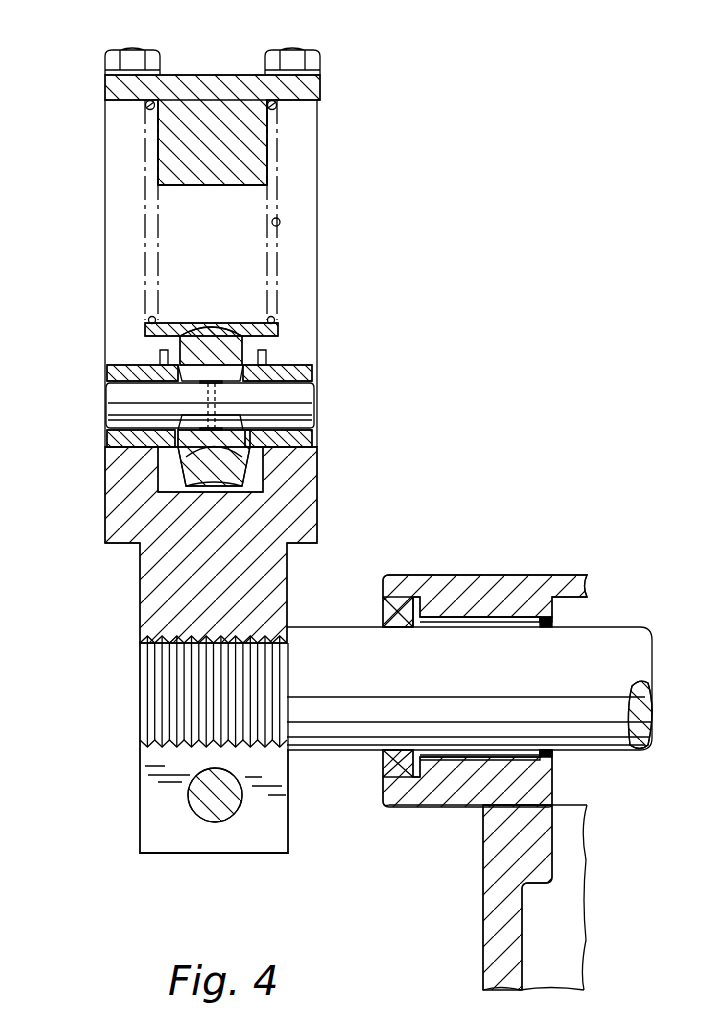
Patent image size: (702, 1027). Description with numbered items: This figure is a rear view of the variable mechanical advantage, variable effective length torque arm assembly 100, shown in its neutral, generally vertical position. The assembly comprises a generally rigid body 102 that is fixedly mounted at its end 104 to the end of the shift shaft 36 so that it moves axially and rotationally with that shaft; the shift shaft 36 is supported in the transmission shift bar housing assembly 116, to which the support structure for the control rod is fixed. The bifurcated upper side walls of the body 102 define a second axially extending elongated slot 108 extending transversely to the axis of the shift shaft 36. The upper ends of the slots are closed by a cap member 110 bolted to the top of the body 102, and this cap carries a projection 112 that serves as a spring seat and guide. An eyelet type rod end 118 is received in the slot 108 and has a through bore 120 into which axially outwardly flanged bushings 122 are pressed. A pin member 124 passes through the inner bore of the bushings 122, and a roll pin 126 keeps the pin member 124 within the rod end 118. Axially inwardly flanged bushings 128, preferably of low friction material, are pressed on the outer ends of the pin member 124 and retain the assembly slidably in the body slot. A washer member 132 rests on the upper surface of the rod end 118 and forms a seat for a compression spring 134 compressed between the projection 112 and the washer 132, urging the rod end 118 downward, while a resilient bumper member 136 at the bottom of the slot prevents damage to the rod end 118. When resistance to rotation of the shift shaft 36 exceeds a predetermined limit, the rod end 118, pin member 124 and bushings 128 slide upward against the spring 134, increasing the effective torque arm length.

The torque arm assembly 100 is at (414, 156).
The rigid body 102 is at (321, 295).
The end of body 104 is at (130, 812).
The second axially extending elongated slot 108 is at (279, 225).
The cap member 110 is at (224, 82).
The projection 112 is at (228, 141).
The transmission shift bar housing assembly 116 is at (536, 552).
The rod end 118 is at (244, 492).
The through bore 120 is at (292, 397).
The axially outwardly flanged bushings 122 is at (262, 381).
The pin member 124 is at (313, 410).
The roll pin 126 is at (250, 452).
The axially inwardly flanged bushings 128 is at (319, 369).
The washer member 132 is at (279, 330).
The compression spring 134 is at (146, 107).
The resilient bumper member 136 is at (146, 548).
The shift shaft 36 is at (456, 674).